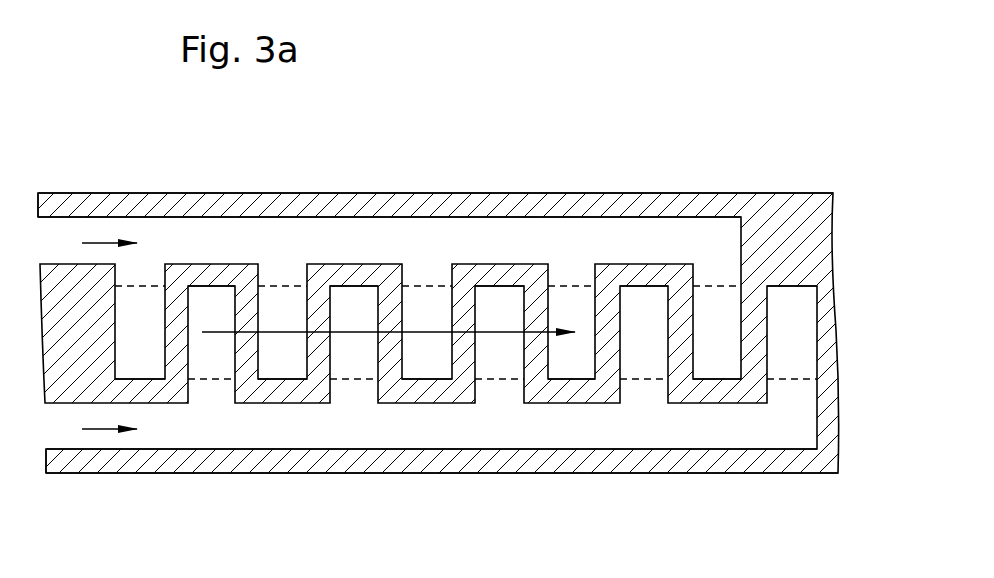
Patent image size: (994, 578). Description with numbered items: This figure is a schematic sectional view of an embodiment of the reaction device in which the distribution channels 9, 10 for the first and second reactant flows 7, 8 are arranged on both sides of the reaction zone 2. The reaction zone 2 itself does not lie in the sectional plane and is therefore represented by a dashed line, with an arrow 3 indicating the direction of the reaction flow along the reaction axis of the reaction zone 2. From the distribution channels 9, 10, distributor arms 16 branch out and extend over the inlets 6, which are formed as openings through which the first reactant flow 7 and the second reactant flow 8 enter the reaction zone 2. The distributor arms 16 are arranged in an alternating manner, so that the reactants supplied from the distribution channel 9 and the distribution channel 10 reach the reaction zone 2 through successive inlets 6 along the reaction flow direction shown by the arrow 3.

The reaction zone 2 is at (437, 303).
The arrow 3 is at (355, 331).
The inlets 6 is at (133, 373).
The first reactant flow 7 is at (99, 429).
The second reactant flow 8 is at (102, 243).
The distribution channel 9 is at (520, 432).
The distribution channel 10 is at (516, 232).
The distributor arms 16 is at (437, 286).